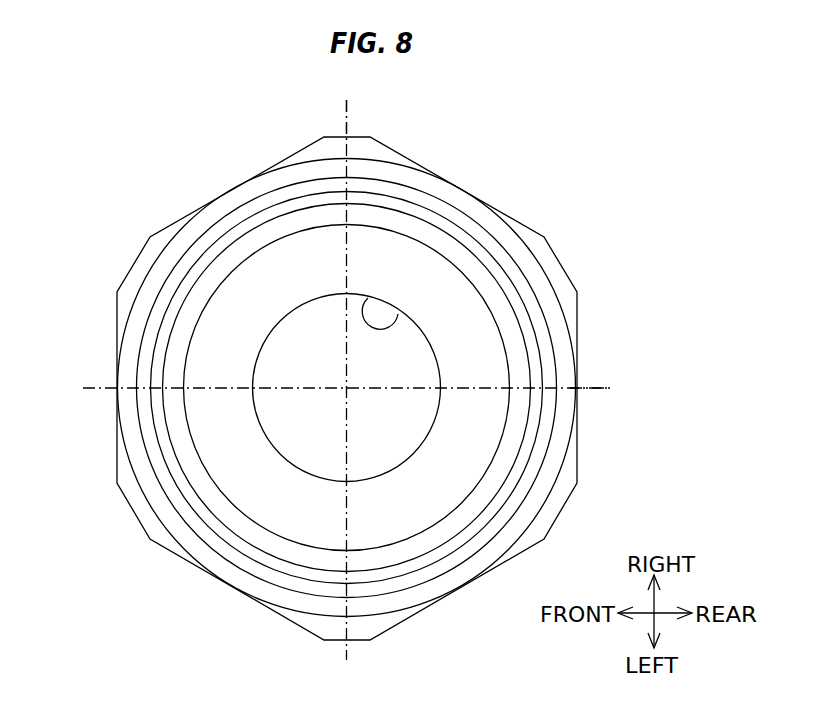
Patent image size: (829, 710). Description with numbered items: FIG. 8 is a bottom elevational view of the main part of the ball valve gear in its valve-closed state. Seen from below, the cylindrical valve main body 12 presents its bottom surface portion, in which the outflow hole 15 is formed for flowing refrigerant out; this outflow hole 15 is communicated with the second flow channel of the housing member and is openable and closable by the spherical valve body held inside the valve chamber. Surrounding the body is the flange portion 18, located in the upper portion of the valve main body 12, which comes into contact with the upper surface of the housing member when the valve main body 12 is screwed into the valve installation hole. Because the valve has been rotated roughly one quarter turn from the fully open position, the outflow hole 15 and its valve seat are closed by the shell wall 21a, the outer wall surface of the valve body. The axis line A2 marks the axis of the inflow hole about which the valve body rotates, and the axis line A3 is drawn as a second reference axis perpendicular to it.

The valve main body 12 is at (260, 272).
The outflow hole 15 is at (400, 314).
The flange portion 18 is at (131, 263).
The shell wall 21a is at (410, 358).
The axis line A2 is at (350, 117).
The axis A3 is at (610, 390).